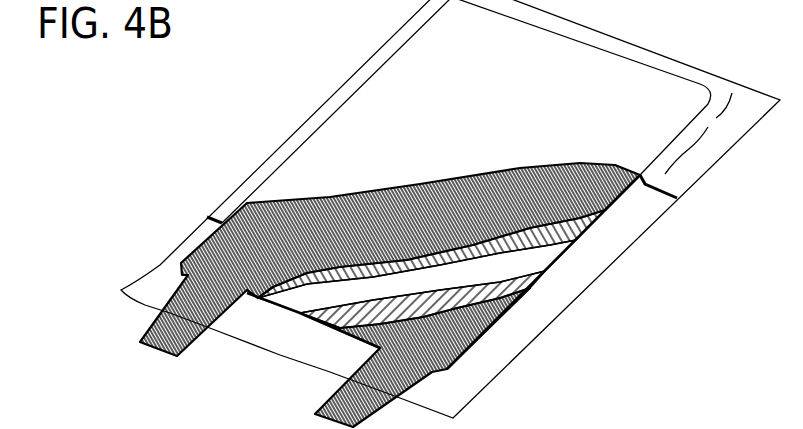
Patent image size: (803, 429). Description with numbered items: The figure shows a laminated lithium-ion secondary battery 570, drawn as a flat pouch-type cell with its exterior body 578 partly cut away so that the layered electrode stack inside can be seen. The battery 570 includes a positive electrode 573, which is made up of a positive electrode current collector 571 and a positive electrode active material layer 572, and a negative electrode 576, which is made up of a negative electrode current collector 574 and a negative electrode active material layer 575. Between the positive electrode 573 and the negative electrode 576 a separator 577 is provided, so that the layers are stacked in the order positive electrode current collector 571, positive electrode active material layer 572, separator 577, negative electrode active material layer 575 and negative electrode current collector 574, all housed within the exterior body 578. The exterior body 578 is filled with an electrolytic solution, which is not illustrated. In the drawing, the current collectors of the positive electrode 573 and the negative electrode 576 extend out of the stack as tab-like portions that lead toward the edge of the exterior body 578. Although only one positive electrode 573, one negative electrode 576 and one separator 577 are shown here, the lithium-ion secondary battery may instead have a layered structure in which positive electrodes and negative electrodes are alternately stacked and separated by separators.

The laminated lithium-ion secondary battery 570 is at (201, 138).
The exterior body 578 is at (377, 90).
The positive electrode current collector 571 is at (612, 205).
The positive electrode active material layer 572 is at (579, 241).
The positive electrode 573 is at (445, 259).
The separator 577 is at (537, 263).
The negative electrode active material layer 575 is at (531, 290).
The negative electrode current collector 574 is at (481, 335).
The negative electrode 576 is at (485, 349).